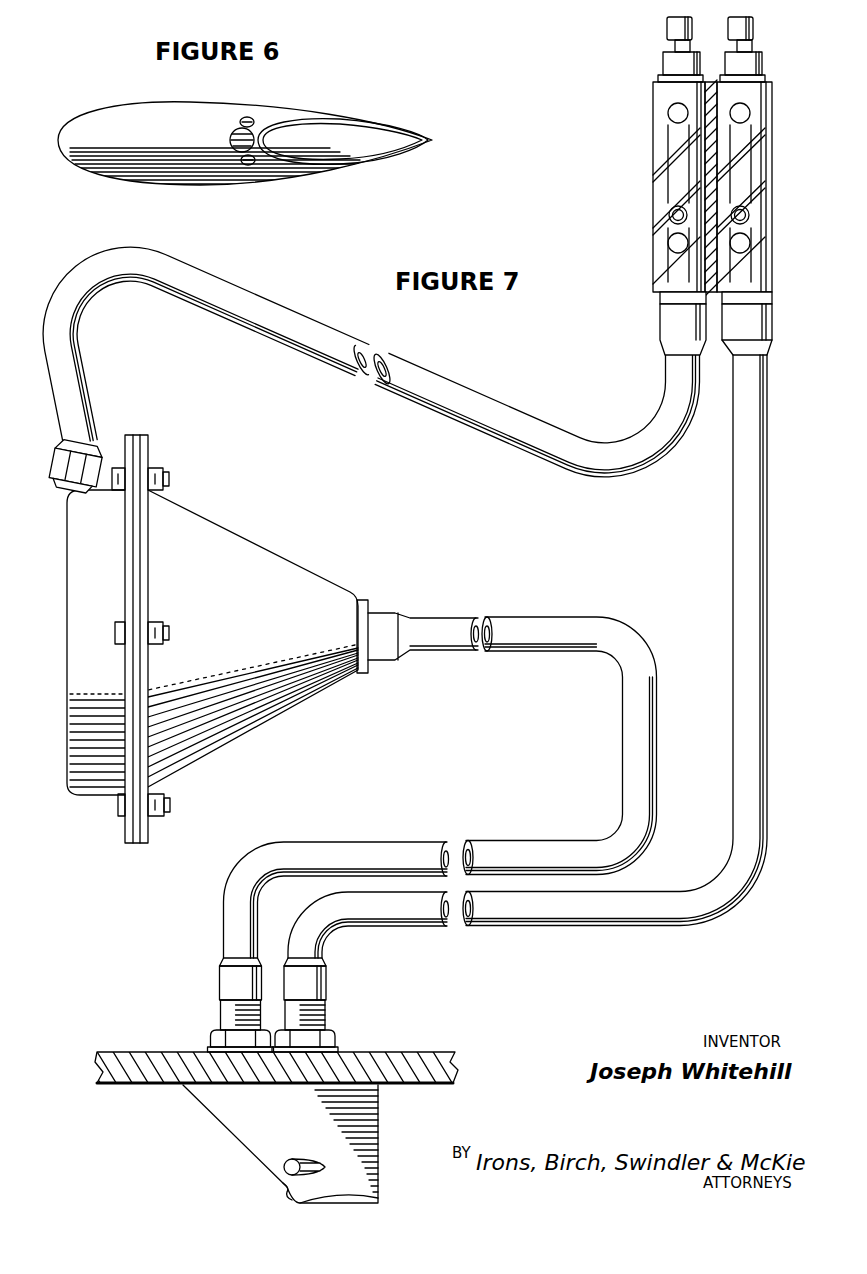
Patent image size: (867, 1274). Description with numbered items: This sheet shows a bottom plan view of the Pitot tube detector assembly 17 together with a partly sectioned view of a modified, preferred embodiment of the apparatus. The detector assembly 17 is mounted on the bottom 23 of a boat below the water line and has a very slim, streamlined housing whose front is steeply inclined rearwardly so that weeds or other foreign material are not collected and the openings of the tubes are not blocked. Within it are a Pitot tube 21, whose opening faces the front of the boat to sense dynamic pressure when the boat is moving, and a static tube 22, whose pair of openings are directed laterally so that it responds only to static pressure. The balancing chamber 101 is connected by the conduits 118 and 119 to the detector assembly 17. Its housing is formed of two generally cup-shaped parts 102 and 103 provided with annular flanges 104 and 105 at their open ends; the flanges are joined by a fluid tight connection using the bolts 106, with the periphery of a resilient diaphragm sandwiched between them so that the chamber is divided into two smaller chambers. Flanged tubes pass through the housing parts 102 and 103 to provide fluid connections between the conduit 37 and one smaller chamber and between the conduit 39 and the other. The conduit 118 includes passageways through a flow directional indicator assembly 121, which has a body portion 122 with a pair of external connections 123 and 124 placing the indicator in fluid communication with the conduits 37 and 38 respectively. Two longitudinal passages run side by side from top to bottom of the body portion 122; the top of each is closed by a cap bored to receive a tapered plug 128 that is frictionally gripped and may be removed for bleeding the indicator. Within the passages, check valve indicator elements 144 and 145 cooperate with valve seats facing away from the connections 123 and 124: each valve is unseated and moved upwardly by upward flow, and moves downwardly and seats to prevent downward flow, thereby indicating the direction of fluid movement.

In FIG. 6, the Pitot tube detector assembly 17 is at (112, 168).
In FIG. 7, the Pitot tube detector assembly 17 is at (381, 1126).
In FIG. 6, the Pitot tube 21 is at (232, 137).
In FIG. 7, the Pitot tube 21 is at (292, 1198).
In FIG. 6, the static tube 22 is at (251, 117).
In FIG. 7, the static tube 22 is at (288, 1170).
In FIG. 7, the bottom of boat 23 is at (395, 1050).
In FIG. 7, the conduit 37 is at (325, 330).
In FIG. 7, the conduit 38 is at (738, 592).
In FIG. 7, the conduit 39 is at (247, 886).
In FIG. 7, the balancing chamber 101 is at (246, 618).
In FIG. 7, the housing part 102 is at (75, 578).
In FIG. 7, the housing part 103 is at (312, 588).
In FIG. 7, the annular flange 104 is at (135, 432).
In FIG. 7, the annular flange 105 is at (149, 442).
In FIG. 7, the bolts 106 is at (165, 470).
In FIG. 7, the conduit 118 is at (90, 326).
In FIG. 7, the conduit 119 is at (658, 771).
In FIG. 7, the flow directional indicator assembly 121 is at (686, 186).
In FIG. 7, the body portion 122 is at (660, 133).
In FIG. 7, the external connection 123 is at (660, 297).
In FIG. 7, the external connection 124 is at (778, 296).
In FIG. 7, the tapered plug 128 is at (667, 28).
In FIG. 7, the check valve indicator element 144 is at (668, 214).
In FIG. 7, the check valve indicator element 145 is at (733, 220).